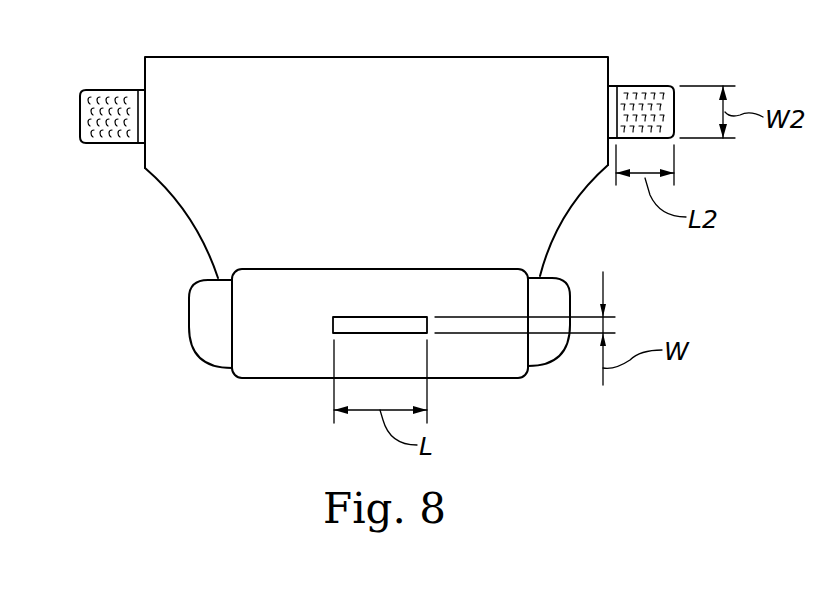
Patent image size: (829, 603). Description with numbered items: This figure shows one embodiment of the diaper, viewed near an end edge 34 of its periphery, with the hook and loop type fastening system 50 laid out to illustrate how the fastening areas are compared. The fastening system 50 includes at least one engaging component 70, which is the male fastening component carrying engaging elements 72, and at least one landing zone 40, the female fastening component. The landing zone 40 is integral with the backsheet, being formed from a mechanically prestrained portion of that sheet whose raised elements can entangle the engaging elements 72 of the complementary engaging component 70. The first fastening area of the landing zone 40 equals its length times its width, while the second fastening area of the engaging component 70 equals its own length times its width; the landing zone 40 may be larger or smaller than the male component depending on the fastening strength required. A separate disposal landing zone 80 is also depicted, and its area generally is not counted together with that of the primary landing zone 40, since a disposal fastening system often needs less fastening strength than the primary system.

The end edge 34 is at (398, 57).
The hook and loop type fastening system 50 is at (80, 112).
The engaging component 70 is at (101, 143).
The engaging elements 72 is at (107, 98).
The disposal landing zone 80 is at (405, 303).
The landing zone 40 is at (336, 323).